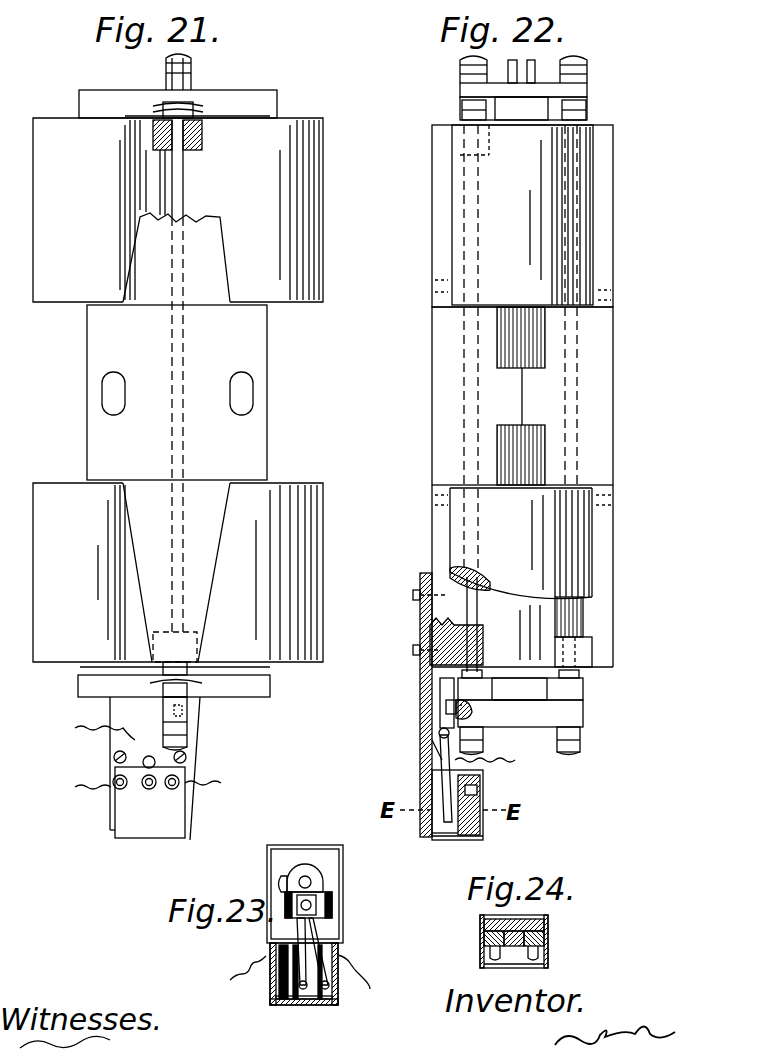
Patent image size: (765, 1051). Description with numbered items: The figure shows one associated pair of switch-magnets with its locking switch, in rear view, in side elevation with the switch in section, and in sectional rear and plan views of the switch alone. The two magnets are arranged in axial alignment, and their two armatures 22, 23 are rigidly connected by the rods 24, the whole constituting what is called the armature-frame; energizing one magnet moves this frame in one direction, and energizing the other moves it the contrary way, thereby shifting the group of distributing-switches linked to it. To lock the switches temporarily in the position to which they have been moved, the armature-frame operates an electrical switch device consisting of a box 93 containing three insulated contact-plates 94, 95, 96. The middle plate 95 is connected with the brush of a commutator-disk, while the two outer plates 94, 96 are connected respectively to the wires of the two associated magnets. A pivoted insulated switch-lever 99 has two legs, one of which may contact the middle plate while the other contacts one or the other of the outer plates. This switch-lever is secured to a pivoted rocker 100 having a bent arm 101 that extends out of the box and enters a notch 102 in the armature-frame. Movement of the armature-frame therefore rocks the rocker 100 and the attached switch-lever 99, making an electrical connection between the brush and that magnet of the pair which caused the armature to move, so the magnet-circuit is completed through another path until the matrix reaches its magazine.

In FIG. 21, the armature 22 is at (90, 99).
In FIG. 22, the armature 22 is at (523, 88).
In FIG. 21, the armature 23 is at (80, 688).
In FIG. 22, the armature 23 is at (520, 712).
In FIG. 21, the rods 24 is at (183, 191).
In FIG. 22, the rods 24 is at (578, 374).
In FIG. 21, the box 93 is at (110, 750).
In FIG. 23, the box 93 is at (303, 845).
In FIG. 24, the box 93 is at (548, 935).
In FIG. 23, the contact-plate 94 is at (285, 988).
In FIG. 24, the contact-plate 94 is at (494, 958).
In FIG. 22, the contact-plate 95 is at (452, 840).
In FIG. 23, the contact-plate 95 is at (305, 992).
In FIG. 24, the contact-plate 95 is at (514, 946).
In FIG. 23, the contact-plate 96 is at (331, 945).
In FIG. 24, the contact-plate 96 is at (540, 958).
In FIG. 22, the switch-lever 99 is at (436, 748).
In FIG. 23, the switch-lever 99 is at (312, 928).
In FIG. 22, the rocker 100 is at (445, 700).
In FIG. 23, the rocker 100 is at (318, 882).
In FIG. 21, the bent arm 101 is at (187, 718).
In FIG. 22, the bent arm 101 is at (450, 711).
In FIG. 23, the bent arm 101 is at (280, 882).
In FIG. 21, the notch 102 is at (182, 710).
In FIG. 22, the notch 102 is at (470, 718).